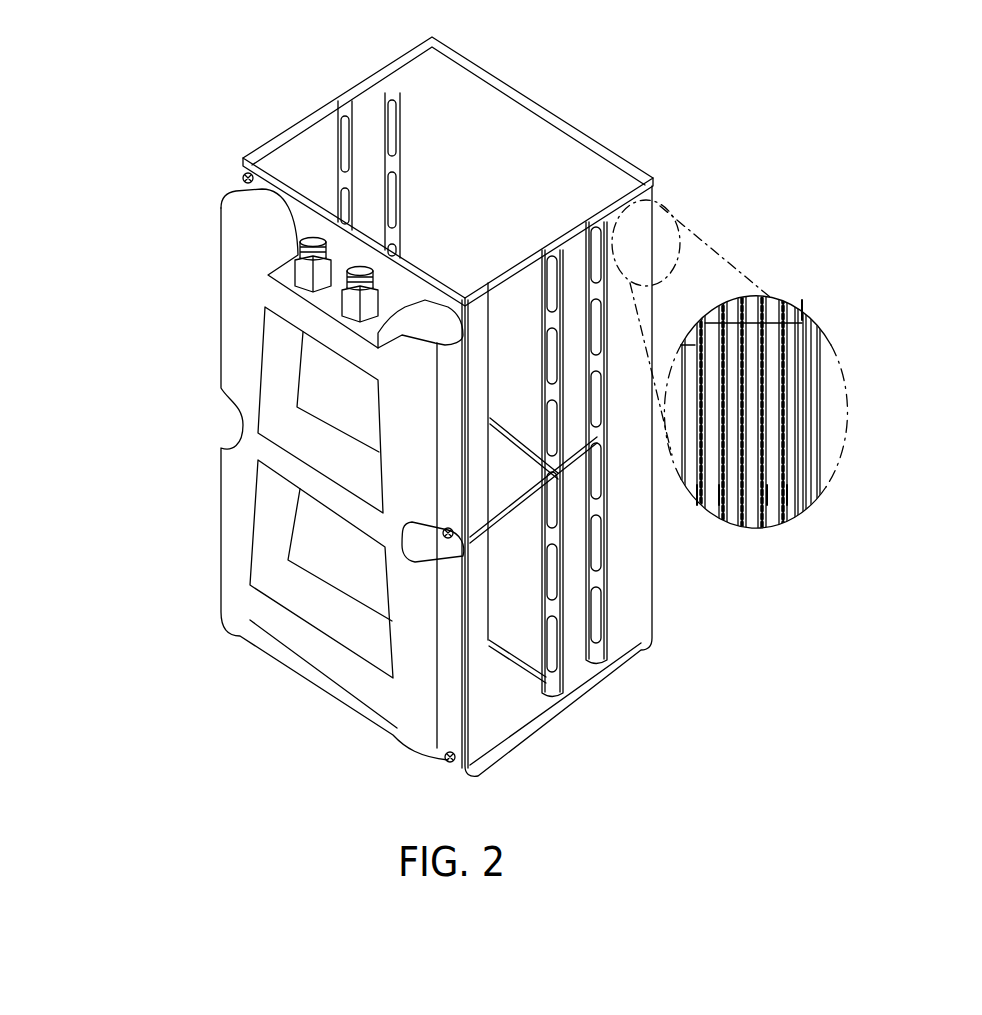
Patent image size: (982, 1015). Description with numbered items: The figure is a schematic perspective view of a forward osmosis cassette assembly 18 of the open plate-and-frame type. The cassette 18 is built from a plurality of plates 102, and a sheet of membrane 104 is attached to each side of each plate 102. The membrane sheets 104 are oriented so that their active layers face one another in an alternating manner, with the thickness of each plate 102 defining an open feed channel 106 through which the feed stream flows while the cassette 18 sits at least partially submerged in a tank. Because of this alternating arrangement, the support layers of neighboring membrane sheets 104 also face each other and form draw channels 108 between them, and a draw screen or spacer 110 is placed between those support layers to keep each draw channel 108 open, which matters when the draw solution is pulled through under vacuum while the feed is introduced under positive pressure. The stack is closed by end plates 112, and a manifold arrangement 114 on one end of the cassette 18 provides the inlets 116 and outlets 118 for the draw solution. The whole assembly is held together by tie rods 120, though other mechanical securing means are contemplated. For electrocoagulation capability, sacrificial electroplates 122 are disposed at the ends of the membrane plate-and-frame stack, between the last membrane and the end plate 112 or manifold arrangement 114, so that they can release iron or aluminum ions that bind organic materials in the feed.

The cassette assembly 18 is at (137, 412).
The plates 102 is at (373, 130).
The membrane sheets 104 is at (507, 623).
The feed channel 106 is at (772, 497).
The draw channels 108 is at (693, 497).
The draw screen or spacer 110 is at (768, 450).
The end plates 112 is at (582, 112).
The manifold arrangement 114 is at (220, 293).
The inlets 116 is at (352, 268).
The outlets 118 is at (243, 176).
The tie rods 120 is at (308, 126).
The electroplates 122 is at (802, 300).